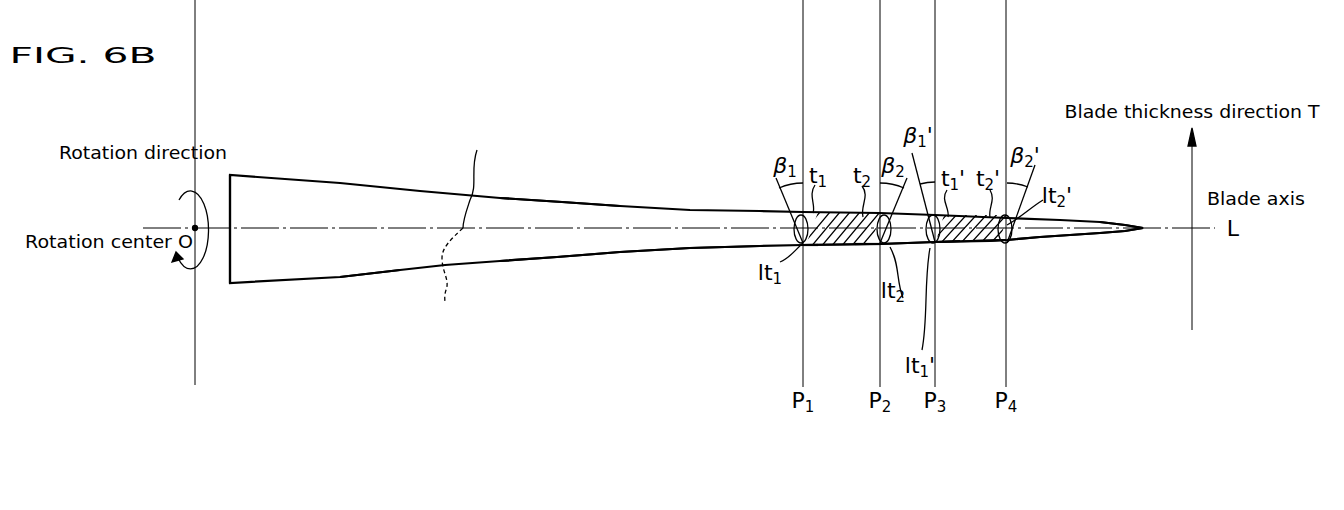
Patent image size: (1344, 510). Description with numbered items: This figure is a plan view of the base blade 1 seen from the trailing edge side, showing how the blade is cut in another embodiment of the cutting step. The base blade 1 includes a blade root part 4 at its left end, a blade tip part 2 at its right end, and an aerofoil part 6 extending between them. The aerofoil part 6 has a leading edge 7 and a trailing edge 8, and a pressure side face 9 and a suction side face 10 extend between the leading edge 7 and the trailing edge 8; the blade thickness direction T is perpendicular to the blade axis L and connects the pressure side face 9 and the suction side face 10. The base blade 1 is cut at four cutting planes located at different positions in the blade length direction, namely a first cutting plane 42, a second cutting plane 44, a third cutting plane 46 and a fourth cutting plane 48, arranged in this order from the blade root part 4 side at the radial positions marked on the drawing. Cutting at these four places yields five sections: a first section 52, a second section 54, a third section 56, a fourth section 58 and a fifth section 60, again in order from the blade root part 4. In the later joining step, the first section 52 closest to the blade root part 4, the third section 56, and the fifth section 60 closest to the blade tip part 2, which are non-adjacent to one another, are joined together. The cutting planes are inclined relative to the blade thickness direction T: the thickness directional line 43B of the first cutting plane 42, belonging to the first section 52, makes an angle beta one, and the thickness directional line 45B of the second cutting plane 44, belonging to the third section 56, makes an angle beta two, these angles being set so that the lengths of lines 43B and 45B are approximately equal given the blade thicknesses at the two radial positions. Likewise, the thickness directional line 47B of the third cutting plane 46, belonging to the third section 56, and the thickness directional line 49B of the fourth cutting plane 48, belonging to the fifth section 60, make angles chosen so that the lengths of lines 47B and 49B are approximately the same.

The base blade 1 is at (384, 139).
The blade tip part 2 is at (1147, 232).
The blade root part 4 is at (243, 270).
The aerofoil part 6 is at (373, 257).
The leading edge 7 is at (474, 178).
The trailing edge 8 is at (448, 278).
The pressure side face 9 is at (562, 200).
The suction side face 10 is at (560, 257).
The first cutting plane 42 is at (812, 247).
The thickness directional line of the first cutting plane 43B is at (810, 255).
The second cutting plane 44 is at (855, 247).
The thickness directional line of the second cutting plane 45B is at (870, 246).
The third cutting plane 46 is at (947, 245).
The thickness directional line of the third cutting plane 47B is at (948, 244).
The fourth cutting plane 48 is at (987, 243).
The thickness directional line of the fourth cutting plane 49B is at (993, 243).
The first section 52 is at (672, 242).
The second section 54 is at (833, 217).
The third section 56 is at (913, 245).
The fourth section 58 is at (965, 217).
The fifth section 60 is at (1065, 240).